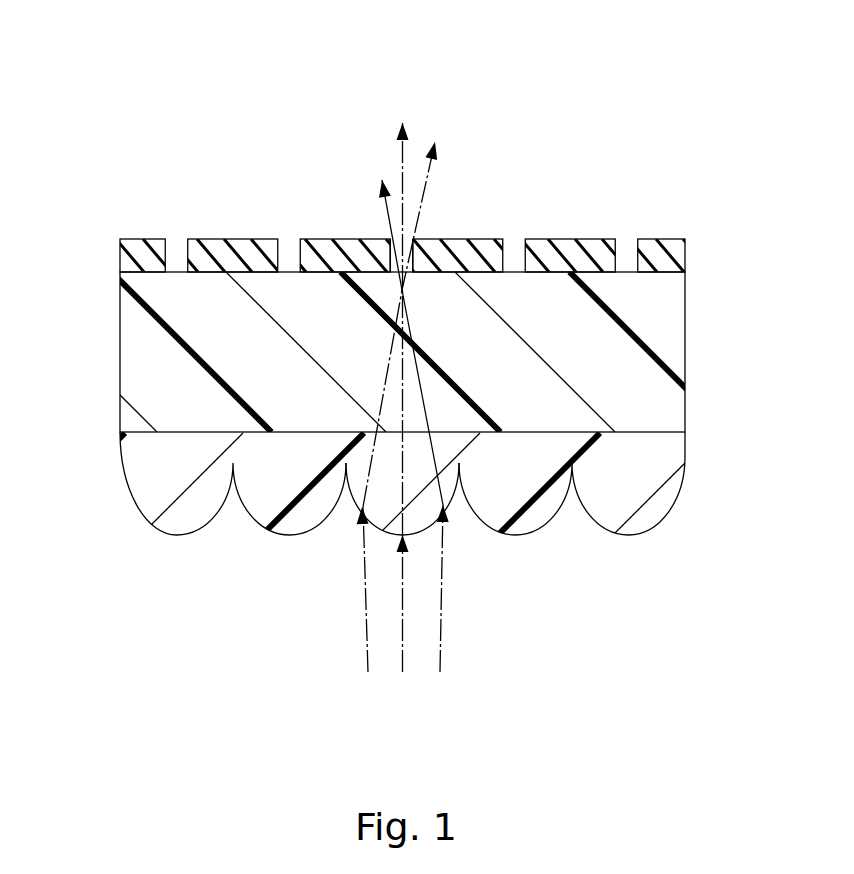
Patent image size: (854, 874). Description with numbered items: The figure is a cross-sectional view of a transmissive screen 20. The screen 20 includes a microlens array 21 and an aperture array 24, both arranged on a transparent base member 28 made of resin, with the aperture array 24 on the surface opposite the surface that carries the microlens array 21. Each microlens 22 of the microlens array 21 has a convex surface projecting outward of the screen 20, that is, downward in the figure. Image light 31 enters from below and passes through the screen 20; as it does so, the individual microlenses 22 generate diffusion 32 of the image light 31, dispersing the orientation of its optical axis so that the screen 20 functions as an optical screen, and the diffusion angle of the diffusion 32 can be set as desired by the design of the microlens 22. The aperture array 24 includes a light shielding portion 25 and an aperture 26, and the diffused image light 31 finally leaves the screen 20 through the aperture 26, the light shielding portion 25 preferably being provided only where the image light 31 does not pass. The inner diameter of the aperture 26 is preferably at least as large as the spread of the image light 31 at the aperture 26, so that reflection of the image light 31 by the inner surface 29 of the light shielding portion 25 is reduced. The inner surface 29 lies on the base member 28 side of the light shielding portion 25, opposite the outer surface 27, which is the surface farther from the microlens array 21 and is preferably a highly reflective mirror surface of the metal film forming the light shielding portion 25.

The screen 20 is at (137, 168).
The microlens array 21 is at (742, 435).
The microlens 22 is at (365, 485).
The aperture array 24 is at (742, 240).
The light shielding portion 25 is at (302, 238).
The aperture 26 is at (398, 232).
The outer surface 27 is at (338, 238).
The transparent base member 28 is at (742, 275).
The inner surface 29 is at (323, 272).
The image light 31 is at (443, 617).
The diffusion 32 is at (376, 104).